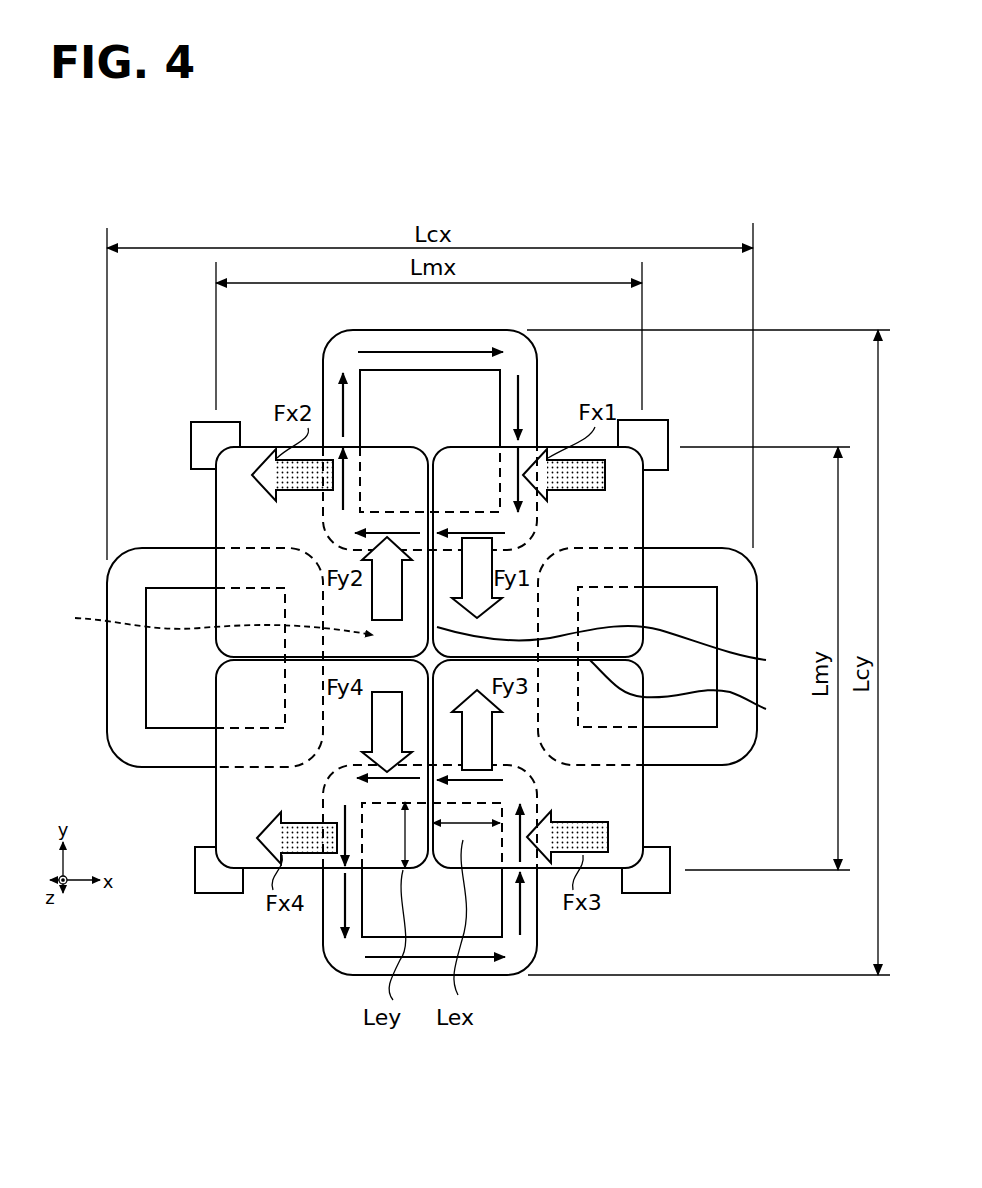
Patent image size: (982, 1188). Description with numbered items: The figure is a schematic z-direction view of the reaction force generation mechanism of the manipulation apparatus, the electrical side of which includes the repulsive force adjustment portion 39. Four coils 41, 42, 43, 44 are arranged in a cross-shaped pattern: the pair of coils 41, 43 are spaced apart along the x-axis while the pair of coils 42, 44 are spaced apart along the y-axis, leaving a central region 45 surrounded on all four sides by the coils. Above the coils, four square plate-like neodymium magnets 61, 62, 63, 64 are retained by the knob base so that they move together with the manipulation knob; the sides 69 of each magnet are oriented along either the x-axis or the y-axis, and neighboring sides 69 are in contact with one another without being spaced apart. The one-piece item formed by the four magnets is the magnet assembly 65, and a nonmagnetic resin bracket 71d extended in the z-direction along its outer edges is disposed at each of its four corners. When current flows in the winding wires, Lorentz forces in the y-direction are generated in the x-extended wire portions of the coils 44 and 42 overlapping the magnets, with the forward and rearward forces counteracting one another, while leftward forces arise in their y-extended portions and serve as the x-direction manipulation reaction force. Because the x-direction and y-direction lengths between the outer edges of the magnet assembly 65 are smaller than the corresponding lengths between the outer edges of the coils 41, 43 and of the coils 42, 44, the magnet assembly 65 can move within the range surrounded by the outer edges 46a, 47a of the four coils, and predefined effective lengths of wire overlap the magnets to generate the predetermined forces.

The repulsive force adjustment portion 39 is at (627, 397).
The coil 41 is at (738, 602).
The coil 42 is at (530, 935).
The coil 43 is at (118, 600).
The coil 44 is at (532, 400).
The central region 45 is at (208, 621).
The outer edge 46a is at (105, 685).
The outer edge 47a is at (438, 330).
The magnet 61 is at (588, 535).
The magnet 62 is at (590, 804).
The magnet 63 is at (285, 805).
The magnet 64 is at (284, 535).
The magnet assembly 65 is at (202, 795).
The side 69 is at (617, 674).
The bracket 71d is at (202, 437).